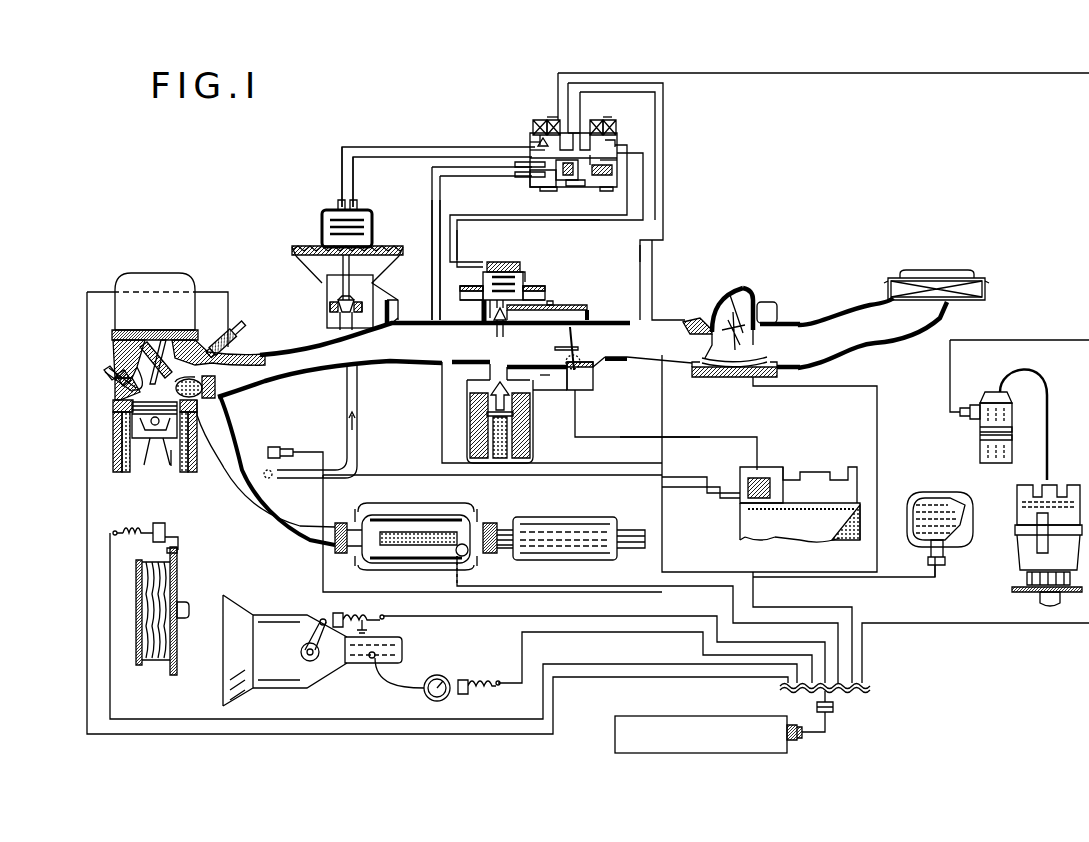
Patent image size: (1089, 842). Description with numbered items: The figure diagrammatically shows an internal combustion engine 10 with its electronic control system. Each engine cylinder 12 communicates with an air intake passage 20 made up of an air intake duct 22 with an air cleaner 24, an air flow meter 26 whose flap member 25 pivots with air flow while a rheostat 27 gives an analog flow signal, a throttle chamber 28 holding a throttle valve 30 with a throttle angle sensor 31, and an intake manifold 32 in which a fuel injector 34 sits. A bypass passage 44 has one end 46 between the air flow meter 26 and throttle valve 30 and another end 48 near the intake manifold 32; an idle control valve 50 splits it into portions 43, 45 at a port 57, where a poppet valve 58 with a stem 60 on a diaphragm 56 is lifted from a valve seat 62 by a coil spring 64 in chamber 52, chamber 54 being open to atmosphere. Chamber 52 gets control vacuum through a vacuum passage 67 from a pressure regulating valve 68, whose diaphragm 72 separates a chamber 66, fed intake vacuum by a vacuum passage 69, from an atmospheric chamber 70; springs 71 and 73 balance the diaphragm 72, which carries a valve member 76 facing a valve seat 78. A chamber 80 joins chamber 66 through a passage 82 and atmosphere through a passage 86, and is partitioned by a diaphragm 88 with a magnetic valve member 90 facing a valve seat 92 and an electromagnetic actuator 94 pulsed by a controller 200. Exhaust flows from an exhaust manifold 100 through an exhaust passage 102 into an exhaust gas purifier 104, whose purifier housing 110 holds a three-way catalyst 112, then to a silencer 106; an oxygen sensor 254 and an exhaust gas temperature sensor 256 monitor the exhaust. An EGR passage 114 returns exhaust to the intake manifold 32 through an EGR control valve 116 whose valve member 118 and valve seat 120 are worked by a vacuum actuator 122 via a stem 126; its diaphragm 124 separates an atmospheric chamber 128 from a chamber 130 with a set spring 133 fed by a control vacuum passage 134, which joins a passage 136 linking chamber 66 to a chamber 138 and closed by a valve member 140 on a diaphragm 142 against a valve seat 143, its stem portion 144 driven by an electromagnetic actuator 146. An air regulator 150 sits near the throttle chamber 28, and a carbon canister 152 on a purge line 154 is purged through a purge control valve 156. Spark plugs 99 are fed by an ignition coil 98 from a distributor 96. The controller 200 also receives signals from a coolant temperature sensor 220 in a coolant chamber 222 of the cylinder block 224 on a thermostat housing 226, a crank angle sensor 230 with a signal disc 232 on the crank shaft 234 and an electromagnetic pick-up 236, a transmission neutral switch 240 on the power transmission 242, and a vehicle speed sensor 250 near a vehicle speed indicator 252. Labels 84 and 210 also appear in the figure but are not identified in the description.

The internal combustion engine 10 is at (200, 312).
The engine cylinder 12 is at (173, 446).
The air intake passage 20 is at (642, 302).
The air intake duct 22 is at (851, 348).
The air cleaner 24 is at (933, 280).
The flap member 25 is at (730, 333).
The air flow meter 26 is at (758, 302).
The rheostat 27 is at (728, 372).
The throttle chamber 28 is at (547, 352).
The throttle valve 30 is at (570, 330).
The throttle angle sensor 31 is at (580, 357).
The intake manifold 32 is at (310, 366).
The fuel injector 34 is at (240, 330).
The bypass passage portion 43 is at (553, 313).
The bypass passage 44 is at (591, 312).
The bypass passage portion 45 is at (482, 313).
The bypass passage end 46 is at (610, 316).
The bypass passage end 48 is at (484, 326).
The idle control valve 50 is at (504, 258).
The chamber 52 is at (536, 287).
The chamber 54 is at (526, 298).
The diaphragm 56 is at (470, 286).
The valve port 57 is at (503, 320).
The poppet valve 58 is at (498, 324).
The stem 60 is at (472, 293).
The valve seat 62 is at (475, 300).
The helical compression coil spring 64 is at (522, 275).
The chamber 66 is at (530, 172).
The control vacuum passage 67 is at (577, 222).
The pressure regulating valve 68 is at (549, 97).
The vacuum passage 69 is at (432, 185).
The chamber 70 is at (605, 185).
The helical compression spring 71 is at (512, 163).
The diaphragm 72 is at (540, 180).
The helical compression spring 73 is at (566, 182).
The valve member 76 is at (575, 188).
The valve seat 78 is at (600, 168).
The chamber 80 is at (605, 160).
The passage 82 is at (592, 153).
The vacuum line 84 is at (457, 238).
The passage 86 is at (645, 252).
The diaphragm 88 is at (618, 127).
The magnetic valve member 90 is at (602, 122).
The valve seat 92 is at (617, 146).
The electromagnetic actuator 94 is at (610, 118).
The distributor 96 is at (973, 423).
The ignition coil 98 is at (1027, 515).
The spark ignition plug 99 is at (104, 378).
The exhaust manifold 100 is at (192, 366).
The exhaust passage 102 is at (252, 424).
The exhaust gas purifier 104 is at (410, 520).
The silencer 106 is at (575, 520).
The purifier housing 110 is at (418, 563).
The three-way catalyst 112 is at (392, 548).
The exhaust gas recirculation passage 114 is at (358, 386).
The EGR control valve 116 is at (336, 310).
The valve member 118 is at (338, 304).
The valve seat 120 is at (375, 306).
The vacuum actuator 122 is at (358, 178).
The diaphragm 124 is at (385, 234).
The stem 126 is at (338, 282).
The chamber 128 is at (323, 257).
The chamber 130 is at (330, 217).
The set spring 133 is at (335, 212).
The control vacuum passage 134 is at (342, 140).
The passage 136 is at (545, 140).
The chamber 138 is at (536, 147).
The valve member 140 is at (541, 135).
The diaphragm 142 is at (577, 133).
The valve seat 143 is at (542, 150).
The stem portion 144 is at (545, 121).
The electromagnetic actuator 146 is at (568, 120).
The air regulator 150 is at (466, 425).
The carbon canister 152 is at (778, 467).
The purge line 154 is at (680, 437).
The purge control valve 156 is at (742, 500).
The controller 200 is at (655, 716).
The converter heater 210 is at (458, 513).
The engine coolant temperature sensor 220 is at (943, 548).
The coolant chamber 222 is at (113, 436).
The engine cylinder block 224 is at (113, 416).
The thermostat housing 226 is at (948, 552).
The crank angle sensor 230 is at (175, 530).
The signal disc 232 is at (178, 566).
The crank shaft 234 is at (188, 603).
The electromagnetic pick-up 236 is at (148, 530).
The transmission neutral switch 240 is at (378, 616).
The power transmission 242 is at (312, 675).
The vehicle speed sensor 250 is at (460, 678).
The vehicle speed indicator 252 is at (446, 696).
The oxygen sensor 254 is at (274, 452).
The exhaust gas temperature sensor 256 is at (465, 553).